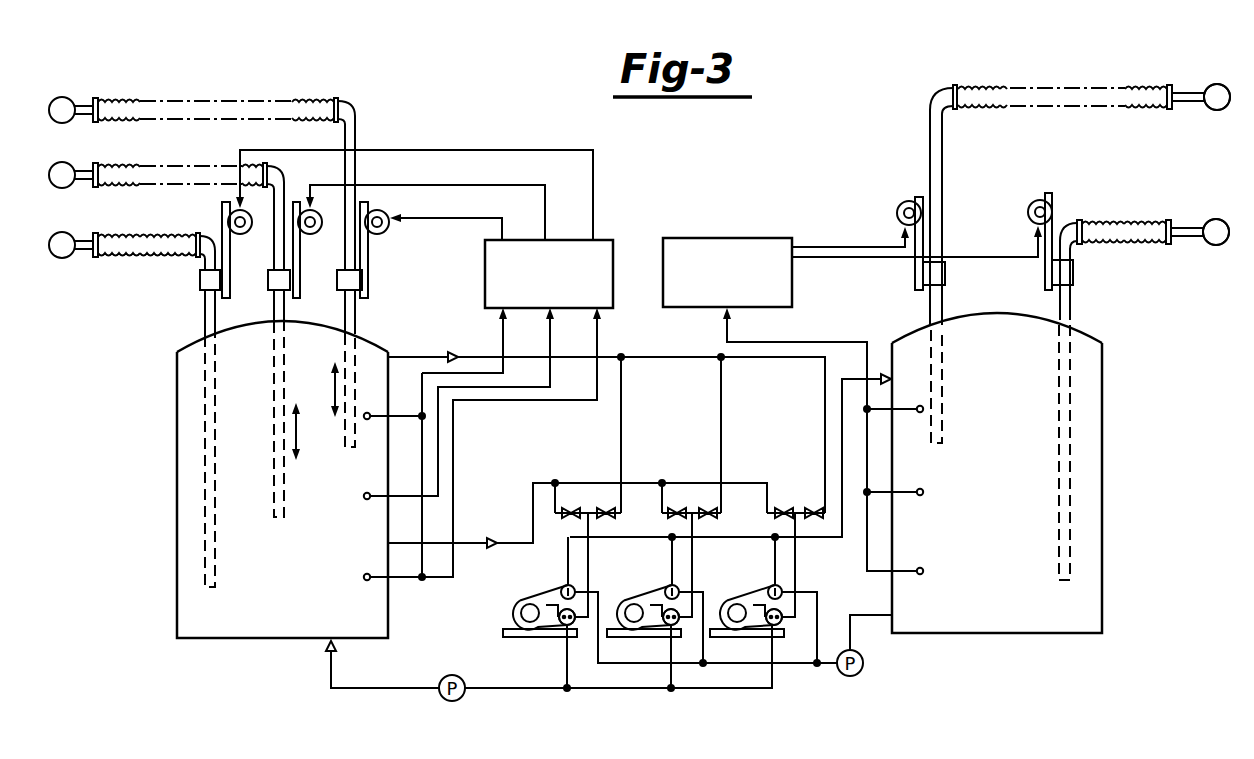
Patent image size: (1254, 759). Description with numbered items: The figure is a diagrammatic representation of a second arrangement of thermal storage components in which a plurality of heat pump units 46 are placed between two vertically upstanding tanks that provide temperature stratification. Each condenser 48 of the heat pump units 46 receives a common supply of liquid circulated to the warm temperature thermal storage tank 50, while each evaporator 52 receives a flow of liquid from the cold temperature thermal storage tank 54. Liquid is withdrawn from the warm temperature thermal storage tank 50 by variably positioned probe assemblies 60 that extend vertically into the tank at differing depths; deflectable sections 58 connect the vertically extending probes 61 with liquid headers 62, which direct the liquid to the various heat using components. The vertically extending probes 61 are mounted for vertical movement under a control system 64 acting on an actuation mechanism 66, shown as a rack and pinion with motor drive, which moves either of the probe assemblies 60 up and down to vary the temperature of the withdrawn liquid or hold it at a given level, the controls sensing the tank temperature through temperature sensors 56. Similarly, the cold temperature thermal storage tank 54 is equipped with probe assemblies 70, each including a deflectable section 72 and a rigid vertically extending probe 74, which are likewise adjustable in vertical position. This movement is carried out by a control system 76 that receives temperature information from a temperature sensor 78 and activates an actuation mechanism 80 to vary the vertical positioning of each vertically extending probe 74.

The heat pump units 46 is at (628, 576).
The condenser 48 is at (563, 510).
The warm temperature thermal storage tank 50 is at (918, 636).
The evaporator 52 is at (567, 628).
The cold temperature thermal storage tank 54 is at (222, 642).
The temperature sensors 56 is at (1074, 217).
The deflectable sections 58 is at (1082, 88).
The probe assemblies 60 is at (930, 75).
The vertically extending probes 61 is at (928, 306).
The liquid headers 62 is at (1215, 218).
The control system 64 is at (732, 238).
The actuation mechanism 66 is at (903, 197).
The probe assemblies 70 is at (330, 122).
The deflectable section 72 is at (150, 100).
The rigid vertically extending probes 74 is at (365, 337).
The control system 76 is at (603, 240).
The temperature sensor 78 is at (368, 419).
The actuation mechanism 80 is at (248, 246).